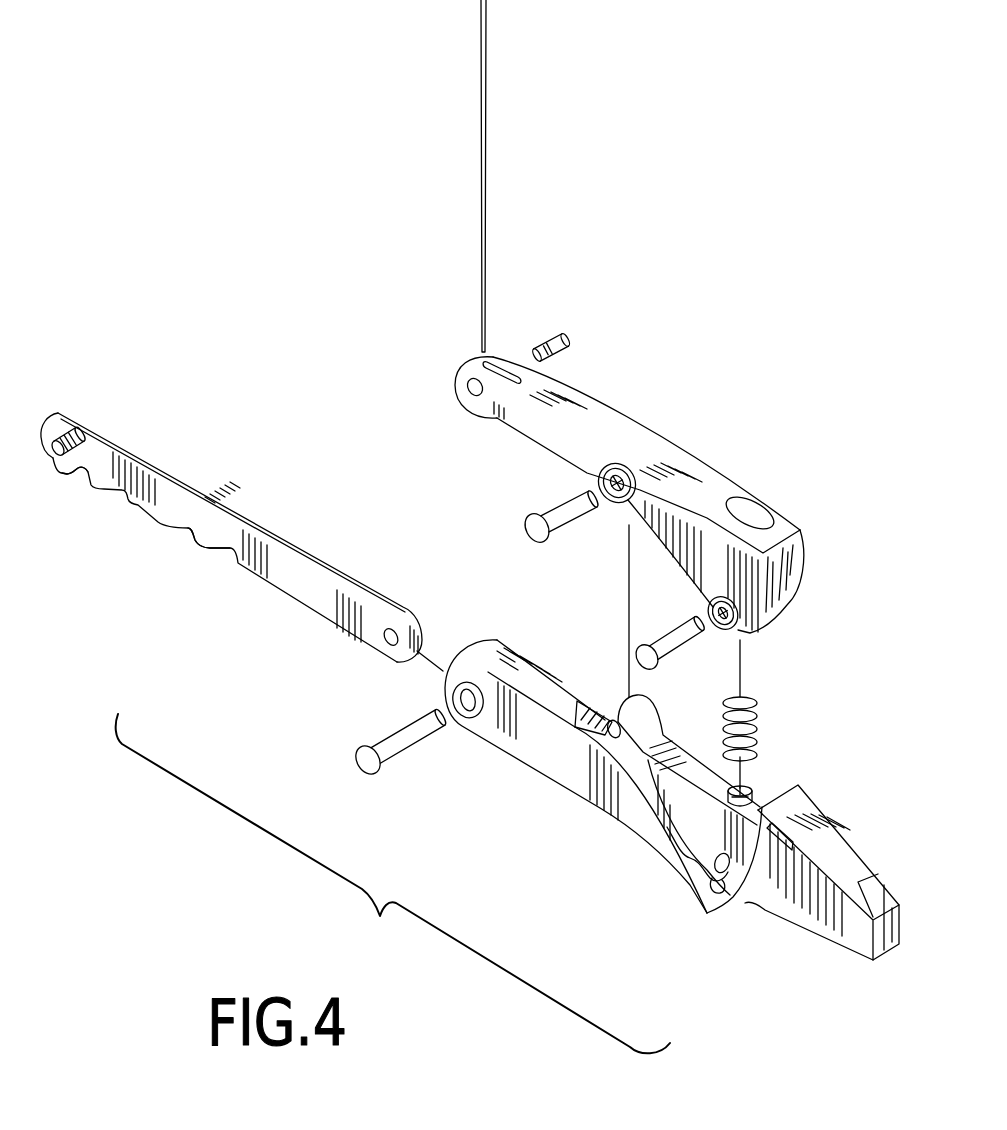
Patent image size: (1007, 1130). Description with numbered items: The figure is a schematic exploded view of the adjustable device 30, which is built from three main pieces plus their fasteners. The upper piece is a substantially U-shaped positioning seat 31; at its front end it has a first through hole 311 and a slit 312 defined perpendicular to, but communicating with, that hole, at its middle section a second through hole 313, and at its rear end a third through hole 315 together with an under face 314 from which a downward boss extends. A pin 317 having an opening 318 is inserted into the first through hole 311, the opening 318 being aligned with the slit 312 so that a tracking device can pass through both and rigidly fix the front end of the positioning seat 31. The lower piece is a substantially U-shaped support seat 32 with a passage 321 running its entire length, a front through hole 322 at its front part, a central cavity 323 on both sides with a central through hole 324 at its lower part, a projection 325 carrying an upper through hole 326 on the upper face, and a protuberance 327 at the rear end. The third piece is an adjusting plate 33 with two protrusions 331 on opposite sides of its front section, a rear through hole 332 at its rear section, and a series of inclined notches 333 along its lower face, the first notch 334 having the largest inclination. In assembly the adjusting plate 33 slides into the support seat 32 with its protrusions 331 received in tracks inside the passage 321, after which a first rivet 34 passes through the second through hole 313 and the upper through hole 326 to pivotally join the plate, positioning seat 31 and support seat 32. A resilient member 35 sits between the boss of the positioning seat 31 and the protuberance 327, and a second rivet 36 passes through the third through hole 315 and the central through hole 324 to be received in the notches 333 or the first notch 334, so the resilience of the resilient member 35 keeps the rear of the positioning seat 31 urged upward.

The adjustable device 30 is at (741, 404).
The positioning seat 31 is at (652, 438).
The first through hole 311 is at (475, 397).
The slit 312 is at (496, 366).
The second through hole 313 is at (615, 503).
The under face 314 is at (780, 580).
The third through hole 315 is at (725, 636).
The pin 317 is at (569, 347).
The opening 318 is at (551, 337).
The support seat 32 is at (560, 782).
The passage 321 is at (872, 890).
The front through hole 322 is at (474, 716).
The central cavity 323 is at (670, 832).
The central through hole 324 is at (711, 893).
The projection 325 is at (652, 720).
The upper through hole 326 is at (607, 718).
The protuberance 327 is at (748, 785).
The adjusting plate 33 is at (297, 598).
The protrusions 331 is at (53, 458).
The rear through hole 332 is at (390, 646).
The inclined notches 333 is at (212, 550).
The first notch 334 is at (79, 475).
The first rivet 34 is at (558, 508).
The resilient member 35 is at (757, 696).
The second rivet 36 is at (672, 640).